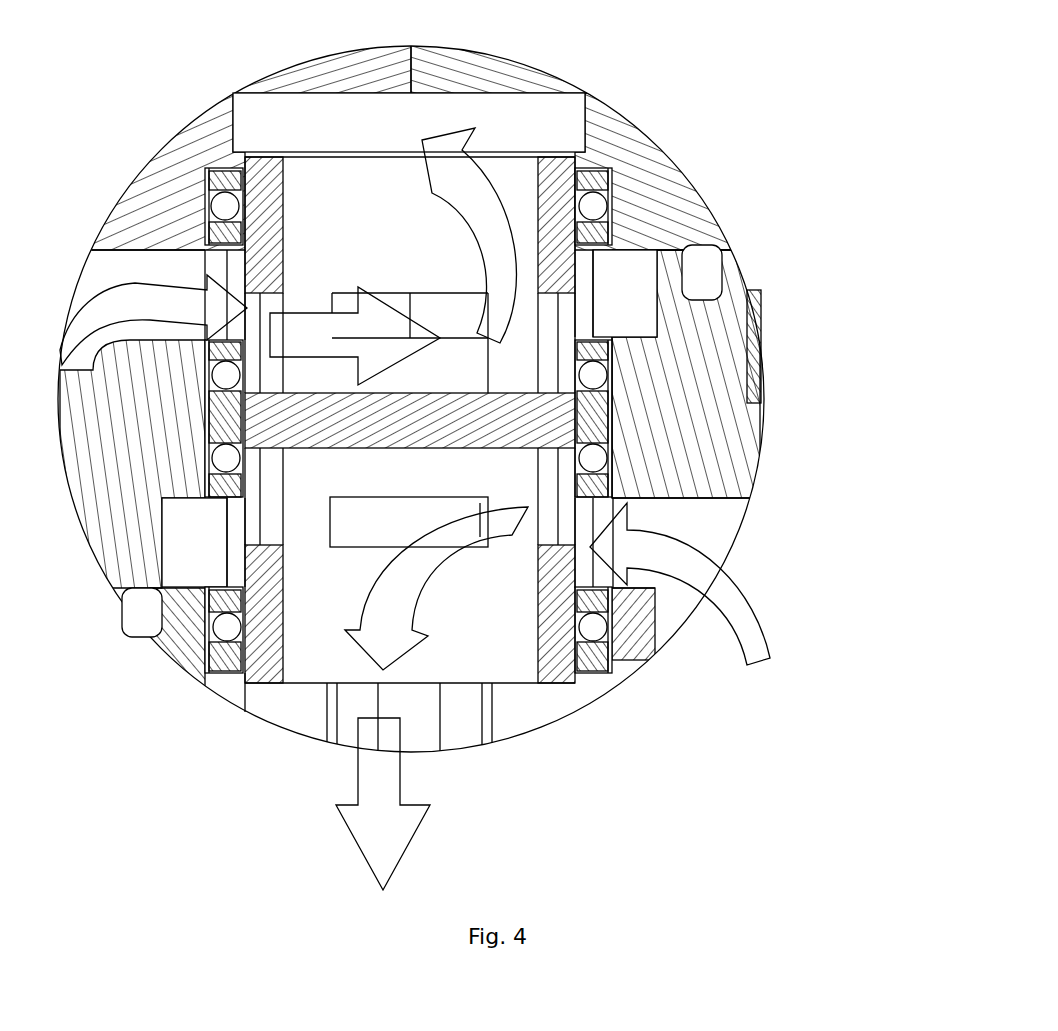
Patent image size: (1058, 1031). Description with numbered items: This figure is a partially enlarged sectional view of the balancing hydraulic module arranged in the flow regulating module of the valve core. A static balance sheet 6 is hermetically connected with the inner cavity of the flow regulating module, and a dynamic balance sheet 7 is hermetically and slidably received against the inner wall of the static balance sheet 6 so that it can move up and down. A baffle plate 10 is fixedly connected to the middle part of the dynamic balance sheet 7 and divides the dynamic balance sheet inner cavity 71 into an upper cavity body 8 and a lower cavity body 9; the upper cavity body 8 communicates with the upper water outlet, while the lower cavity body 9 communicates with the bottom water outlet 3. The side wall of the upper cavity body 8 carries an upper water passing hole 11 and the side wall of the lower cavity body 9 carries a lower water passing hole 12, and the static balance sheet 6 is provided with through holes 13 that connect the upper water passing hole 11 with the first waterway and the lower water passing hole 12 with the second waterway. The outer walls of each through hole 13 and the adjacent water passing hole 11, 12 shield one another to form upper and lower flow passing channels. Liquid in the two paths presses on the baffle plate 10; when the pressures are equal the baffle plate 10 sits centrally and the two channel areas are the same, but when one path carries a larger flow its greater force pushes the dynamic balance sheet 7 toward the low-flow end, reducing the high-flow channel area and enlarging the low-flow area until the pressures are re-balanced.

The bottom water outlet 3 is at (423, 733).
The static balance sheet 6 is at (612, 413).
The dynamic balance sheet 7 is at (238, 152).
The upper cavity body 8 is at (523, 373).
The lower cavity body 9 is at (515, 603).
The baffle plate 10 is at (380, 437).
The upper water passing hole 11 is at (272, 303).
The lower water passing hole 12 is at (552, 528).
The through hole 13 is at (233, 263).
The dynamic balance sheet inner cavity 71 is at (868, 738).